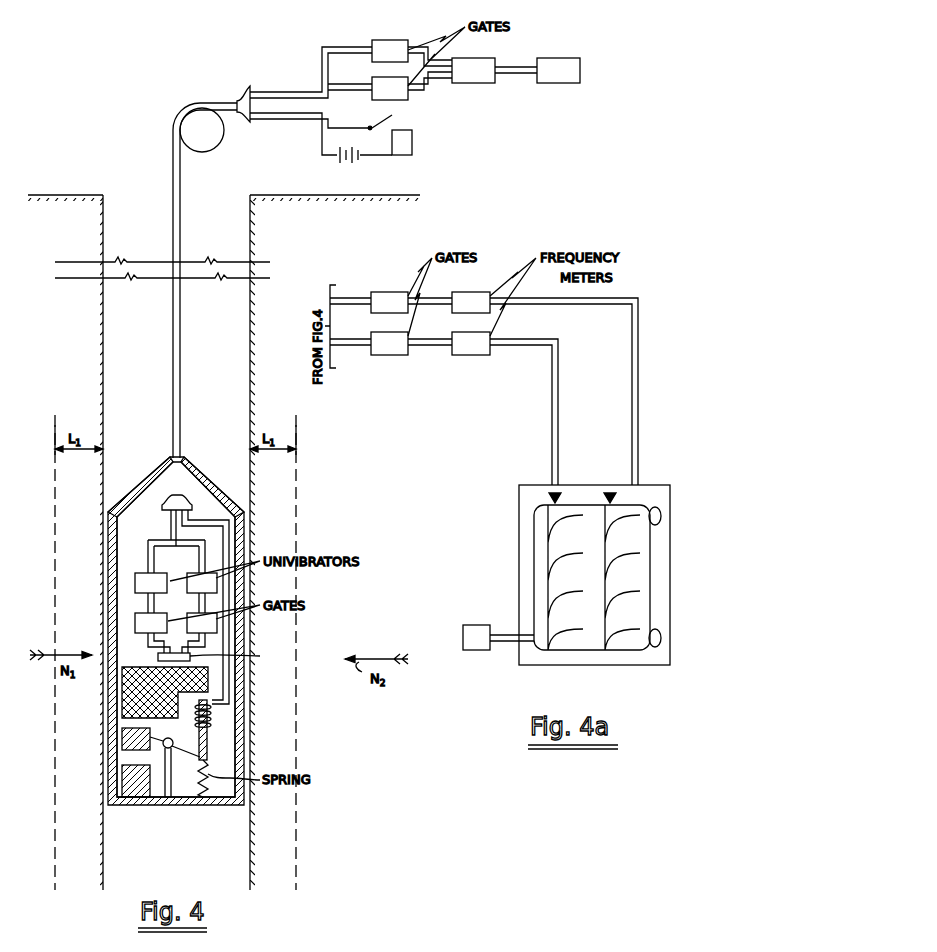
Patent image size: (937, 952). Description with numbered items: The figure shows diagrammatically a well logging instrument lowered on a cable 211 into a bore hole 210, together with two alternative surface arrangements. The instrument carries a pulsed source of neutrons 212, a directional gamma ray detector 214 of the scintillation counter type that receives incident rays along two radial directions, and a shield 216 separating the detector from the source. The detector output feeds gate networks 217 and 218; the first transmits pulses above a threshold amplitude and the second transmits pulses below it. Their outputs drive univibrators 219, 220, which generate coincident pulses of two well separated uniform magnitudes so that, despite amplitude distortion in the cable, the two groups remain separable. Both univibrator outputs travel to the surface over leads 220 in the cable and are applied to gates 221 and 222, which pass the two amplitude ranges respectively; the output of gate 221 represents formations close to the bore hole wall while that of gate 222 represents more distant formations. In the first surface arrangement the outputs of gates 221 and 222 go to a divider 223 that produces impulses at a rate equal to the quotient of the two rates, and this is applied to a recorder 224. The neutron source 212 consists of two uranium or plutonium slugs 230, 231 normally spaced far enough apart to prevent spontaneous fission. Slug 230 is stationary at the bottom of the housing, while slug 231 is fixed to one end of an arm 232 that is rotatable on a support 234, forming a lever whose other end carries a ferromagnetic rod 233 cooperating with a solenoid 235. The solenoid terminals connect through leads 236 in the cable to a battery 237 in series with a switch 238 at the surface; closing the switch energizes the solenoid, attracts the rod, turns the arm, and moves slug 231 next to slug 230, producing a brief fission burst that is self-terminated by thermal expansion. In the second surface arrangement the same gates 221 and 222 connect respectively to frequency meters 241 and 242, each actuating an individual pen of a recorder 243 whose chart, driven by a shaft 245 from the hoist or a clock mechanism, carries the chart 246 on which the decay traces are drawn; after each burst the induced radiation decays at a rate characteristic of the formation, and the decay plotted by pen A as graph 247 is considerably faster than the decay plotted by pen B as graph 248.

In FIG. 4, the bore hole 210 is at (232, 483).
In FIG. 4, the cable 211 is at (173, 168).
In FIG. 4, the source of neutrons 212 is at (228, 754).
In FIG. 4, the gamma ray detector 214 is at (193, 652).
In FIG. 4, the shield 216 is at (124, 693).
In FIG. 4, the gate network 217 is at (151, 623).
In FIG. 4, the gate network 218 is at (202, 623).
In FIG. 4, the univibrator 219 is at (151, 583).
In FIG. 4, the univibrator / leads 220 is at (304, 92).
In FIG. 4A, the univibrator / leads 220 is at (344, 298).
In FIG. 4, the gate network 221 is at (412, 53).
In FIG. 4A, the gate network 221 is at (411, 302).
In FIG. 4, the gate network 222 is at (412, 86).
In FIG. 4A, the gate network 222 is at (411, 343).
In FIG. 4, the divider 223 is at (470, 83).
In FIG. 4, the recorder 224 is at (580, 78).
In FIG. 4, the slug 230 is at (128, 781).
In FIG. 4, the slug 231 is at (128, 742).
In FIG. 4, the arm 232 is at (173, 797).
In FIG. 4, the ferromagnetic rod 233 is at (208, 740).
In FIG. 4, the support 234 is at (163, 797).
In FIG. 4, the solenoid 235 is at (212, 716).
In FIG. 4, the leads 236 is at (292, 113).
In FIG. 4A, the leads 236 is at (344, 345).
In FIG. 4, the battery 237 is at (350, 162).
In FIG. 4, the switch 238 is at (412, 145).
In FIG. 4A, the frequency meter 241 is at (545, 388).
In FIG. 4A, the frequency meter 242 is at (505, 408).
In FIG. 4A, the recorder 243 is at (592, 575).
In FIG. 4A, the shaft 245 is at (506, 641).
In FIG. 4A, the chart 246 is at (632, 578).
In FIG. 4A, the graph 247 is at (612, 617).
In FIG. 4A, the trace 248 is at (548, 606).